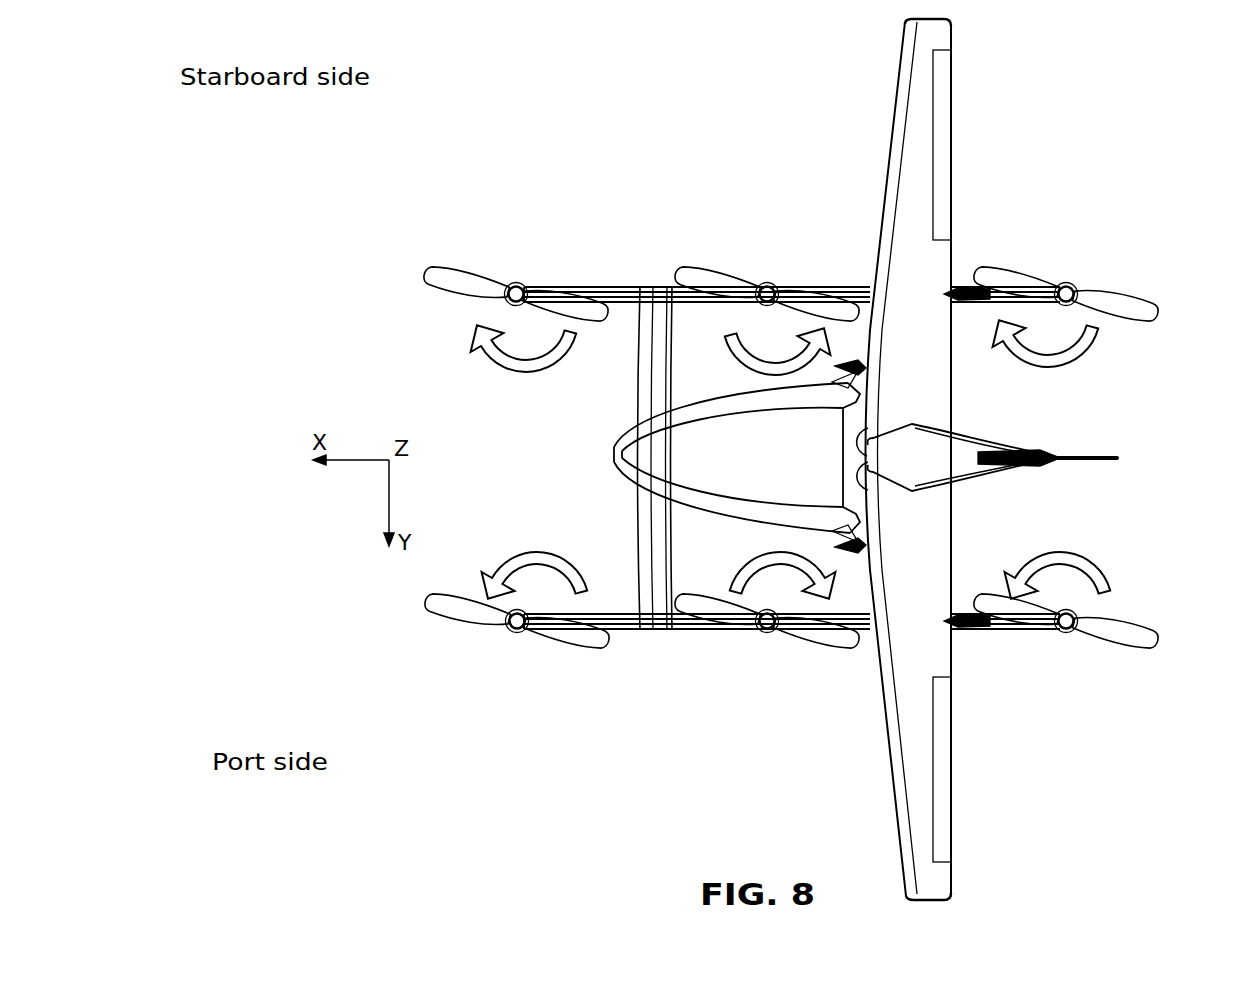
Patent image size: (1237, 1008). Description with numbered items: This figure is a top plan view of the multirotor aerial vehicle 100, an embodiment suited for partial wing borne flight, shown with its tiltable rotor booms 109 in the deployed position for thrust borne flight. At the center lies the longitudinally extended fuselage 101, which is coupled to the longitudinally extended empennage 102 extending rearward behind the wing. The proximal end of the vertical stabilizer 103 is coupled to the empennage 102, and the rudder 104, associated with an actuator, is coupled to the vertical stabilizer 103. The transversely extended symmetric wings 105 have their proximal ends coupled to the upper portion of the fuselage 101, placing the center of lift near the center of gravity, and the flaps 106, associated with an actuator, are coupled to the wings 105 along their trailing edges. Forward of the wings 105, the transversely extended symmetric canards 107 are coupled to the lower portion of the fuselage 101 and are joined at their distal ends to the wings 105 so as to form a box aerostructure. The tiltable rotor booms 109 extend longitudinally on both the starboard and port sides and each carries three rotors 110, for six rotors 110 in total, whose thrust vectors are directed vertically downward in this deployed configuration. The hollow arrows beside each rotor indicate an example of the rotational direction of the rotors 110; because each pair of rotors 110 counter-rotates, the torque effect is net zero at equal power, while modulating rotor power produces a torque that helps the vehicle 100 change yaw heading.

The multirotor aerial vehicle 100 is at (610, 150).
The fuselage 101 is at (614, 441).
The empennage 102 is at (968, 442).
The vertical stabilizer 103 is at (1107, 455).
The rudder 104 is at (1047, 458).
The wings 105 is at (890, 127).
The flaps 106 is at (951, 150).
The canards 107 is at (636, 340).
The tiltable rotor booms 109 is at (642, 287).
The rotors 110 is at (492, 283).